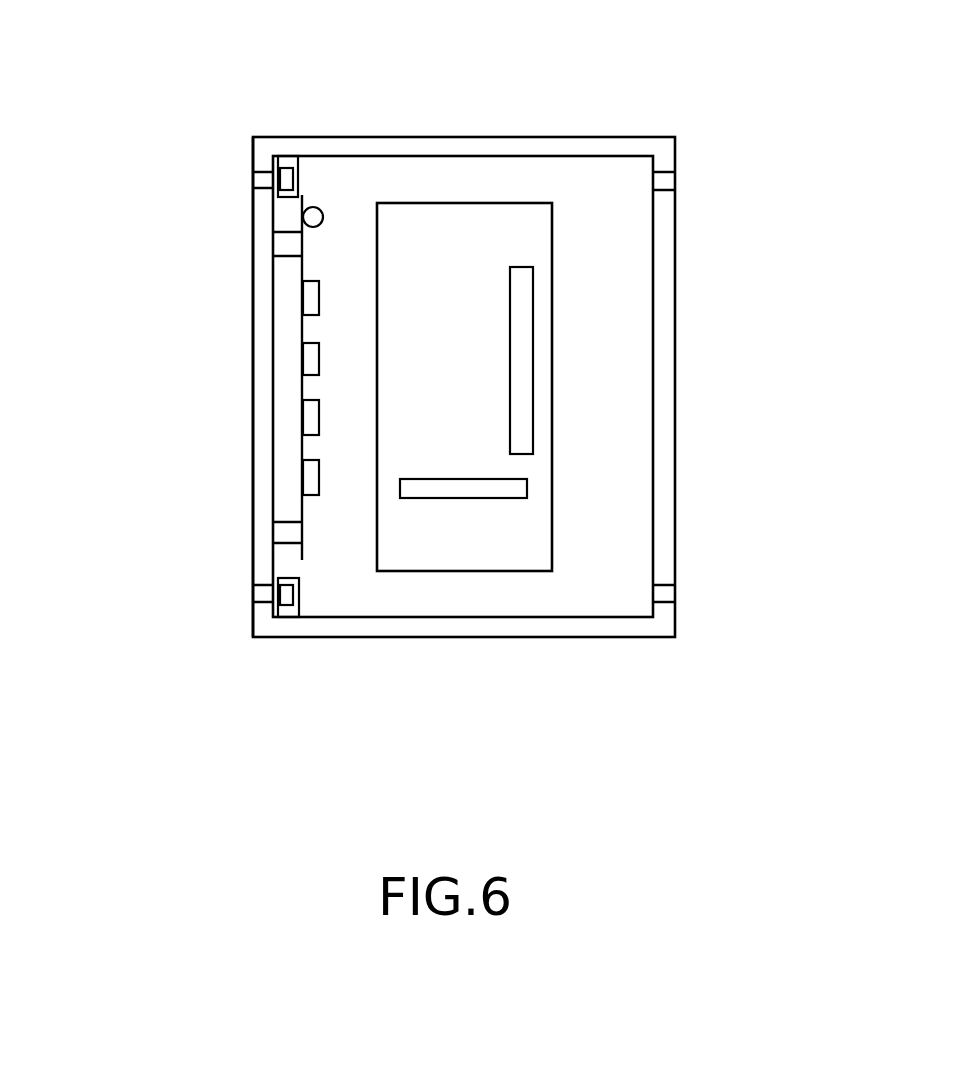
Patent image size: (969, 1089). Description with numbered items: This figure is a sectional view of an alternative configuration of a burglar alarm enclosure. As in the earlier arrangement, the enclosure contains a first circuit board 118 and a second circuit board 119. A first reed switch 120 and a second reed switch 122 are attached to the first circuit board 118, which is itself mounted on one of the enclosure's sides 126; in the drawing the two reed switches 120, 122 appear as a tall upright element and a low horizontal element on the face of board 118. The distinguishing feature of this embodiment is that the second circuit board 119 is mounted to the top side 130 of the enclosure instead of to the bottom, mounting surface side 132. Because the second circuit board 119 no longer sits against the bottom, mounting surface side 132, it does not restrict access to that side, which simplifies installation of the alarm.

The first circuit board 118 is at (408, 203).
The second circuit board 119 is at (303, 560).
The first reed switch 120 is at (520, 291).
The second reed switch 122 is at (422, 490).
The side of the alarm enclosure 126 is at (473, 182).
The top side of the enclosure 130 is at (253, 383).
The bottom, mounting surface side 132 is at (675, 405).